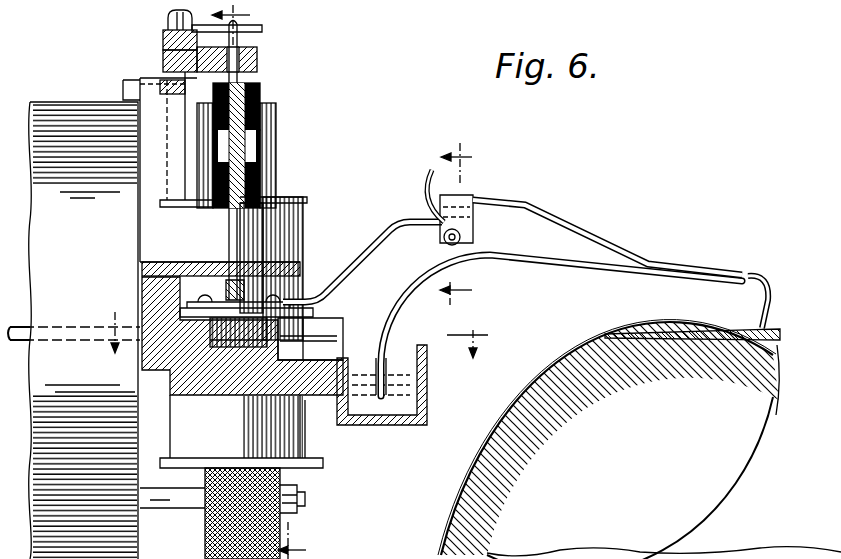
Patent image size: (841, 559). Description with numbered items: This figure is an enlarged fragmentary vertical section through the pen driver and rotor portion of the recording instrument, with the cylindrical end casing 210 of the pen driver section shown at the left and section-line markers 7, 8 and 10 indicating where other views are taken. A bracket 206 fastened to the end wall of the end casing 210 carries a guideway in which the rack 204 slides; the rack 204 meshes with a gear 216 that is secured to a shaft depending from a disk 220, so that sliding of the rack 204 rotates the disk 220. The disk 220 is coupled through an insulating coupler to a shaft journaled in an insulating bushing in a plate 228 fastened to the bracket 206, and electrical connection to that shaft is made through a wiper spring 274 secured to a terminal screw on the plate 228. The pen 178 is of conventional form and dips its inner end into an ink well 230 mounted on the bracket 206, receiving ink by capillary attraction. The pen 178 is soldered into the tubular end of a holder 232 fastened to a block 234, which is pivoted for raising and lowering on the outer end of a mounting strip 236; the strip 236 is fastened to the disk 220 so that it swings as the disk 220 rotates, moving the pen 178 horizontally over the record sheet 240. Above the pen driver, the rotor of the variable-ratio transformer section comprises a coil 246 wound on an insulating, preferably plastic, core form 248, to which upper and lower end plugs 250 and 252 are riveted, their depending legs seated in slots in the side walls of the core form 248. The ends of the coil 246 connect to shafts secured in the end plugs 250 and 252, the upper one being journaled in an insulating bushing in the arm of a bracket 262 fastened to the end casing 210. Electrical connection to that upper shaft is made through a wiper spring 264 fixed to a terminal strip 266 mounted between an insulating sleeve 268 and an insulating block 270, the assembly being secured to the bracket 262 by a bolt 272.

The pen 178 is at (565, 268).
The rack 204 is at (323, 327).
The bracket 206 is at (122, 370).
The end casing 210 is at (53, 112).
The gear 216 is at (262, 315).
The disk 220 is at (240, 218).
The plate 228 is at (248, 298).
The ink well 230 is at (370, 427).
The holder 232 is at (582, 230).
The block 234 is at (467, 218).
The mounting strip 236 is at (356, 252).
The record sheet 240 is at (703, 330).
The coil 246 is at (258, 100).
The core form 248 is at (252, 137).
The upper end plug 250 is at (257, 83).
The lower end plug 252 is at (268, 198).
The bracket 262 is at (257, 50).
The wiper spring 264 is at (245, 28).
The terminal strip 266 is at (168, 44).
The insulating sleeve 268 is at (190, 28).
The insulating block 270 is at (165, 56).
The bolt 272 is at (170, 14).
The wiper spring 274 is at (232, 260).
The section line 7- 7 is at (267, 282).
The section line 8- 8 is at (464, 224).
The section line 10- 10 is at (294, 325).